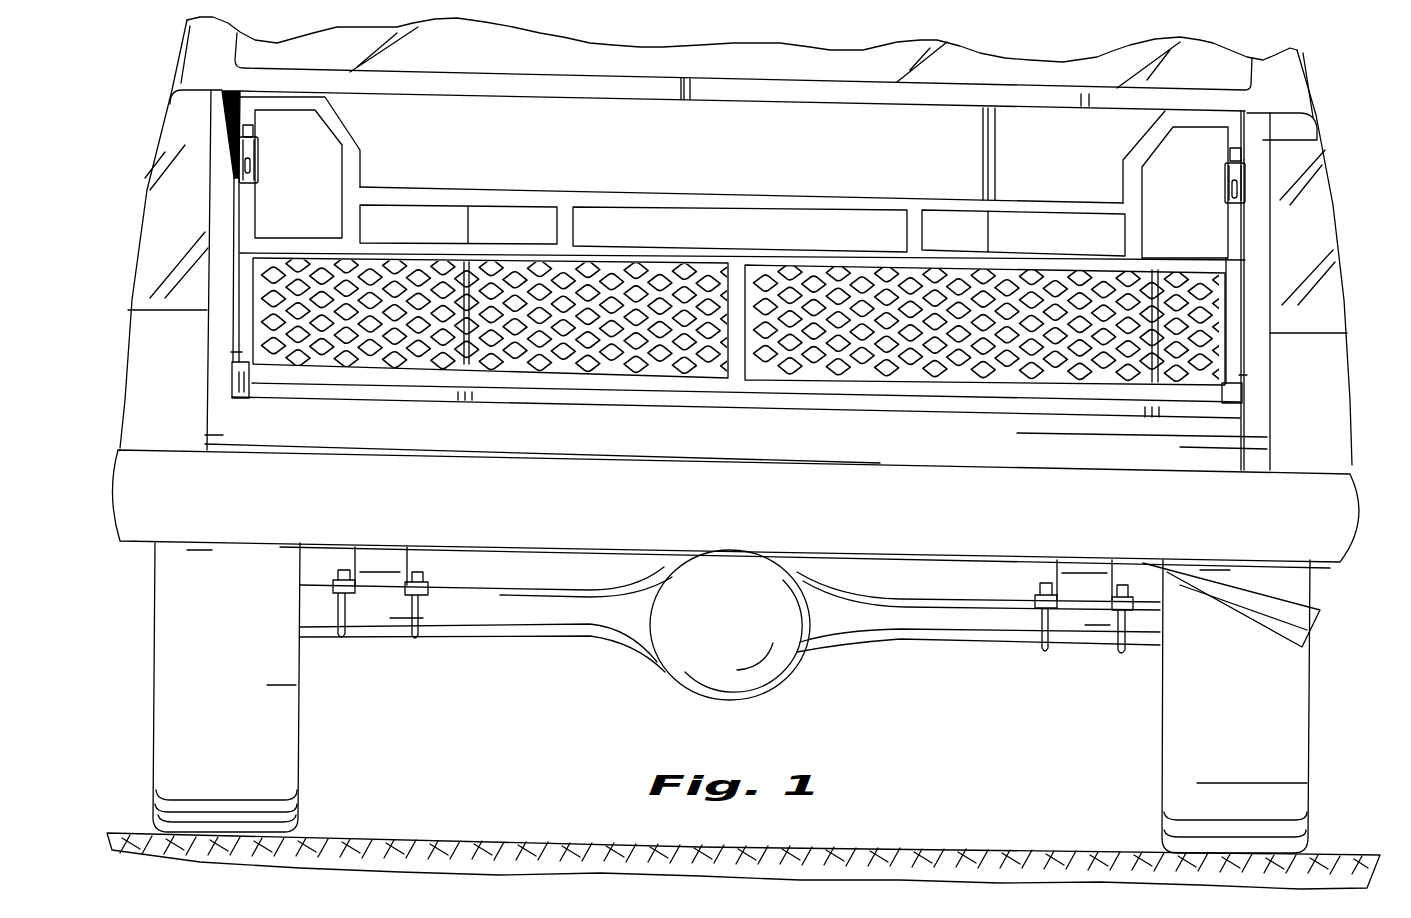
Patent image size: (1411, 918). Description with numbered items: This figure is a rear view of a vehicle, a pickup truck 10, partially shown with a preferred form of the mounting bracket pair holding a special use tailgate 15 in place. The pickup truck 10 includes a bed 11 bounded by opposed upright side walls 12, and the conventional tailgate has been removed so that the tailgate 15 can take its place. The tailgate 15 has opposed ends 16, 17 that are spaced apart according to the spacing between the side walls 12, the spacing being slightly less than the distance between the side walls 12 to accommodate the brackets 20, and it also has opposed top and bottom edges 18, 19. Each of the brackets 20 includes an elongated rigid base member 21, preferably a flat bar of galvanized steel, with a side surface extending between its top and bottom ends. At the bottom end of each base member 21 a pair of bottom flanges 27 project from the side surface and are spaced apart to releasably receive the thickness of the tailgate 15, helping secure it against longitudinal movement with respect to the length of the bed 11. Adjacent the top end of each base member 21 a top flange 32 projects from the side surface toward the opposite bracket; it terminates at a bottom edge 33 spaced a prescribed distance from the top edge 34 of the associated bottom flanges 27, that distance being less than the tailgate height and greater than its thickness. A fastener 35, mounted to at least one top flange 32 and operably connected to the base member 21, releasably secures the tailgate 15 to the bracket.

The pickup truck 10 is at (1352, 137).
The bed 11 is at (933, 410).
The side walls 12 is at (175, 140).
The tailgate 15 is at (733, 167).
The tailgate end 16 is at (250, 115).
The tailgate end 17 is at (1237, 117).
The top edge 18 is at (303, 98).
The bottom edge 19 is at (633, 393).
The mounting brackets 20 is at (232, 210).
The base member 21 is at (233, 263).
The bottom flanges 27 is at (247, 380).
The top flange 32 is at (263, 167).
The bottom edge of top flange 33 is at (243, 183).
The top edge of bottom flange 34 is at (238, 360).
The fastener 35 is at (267, 143).